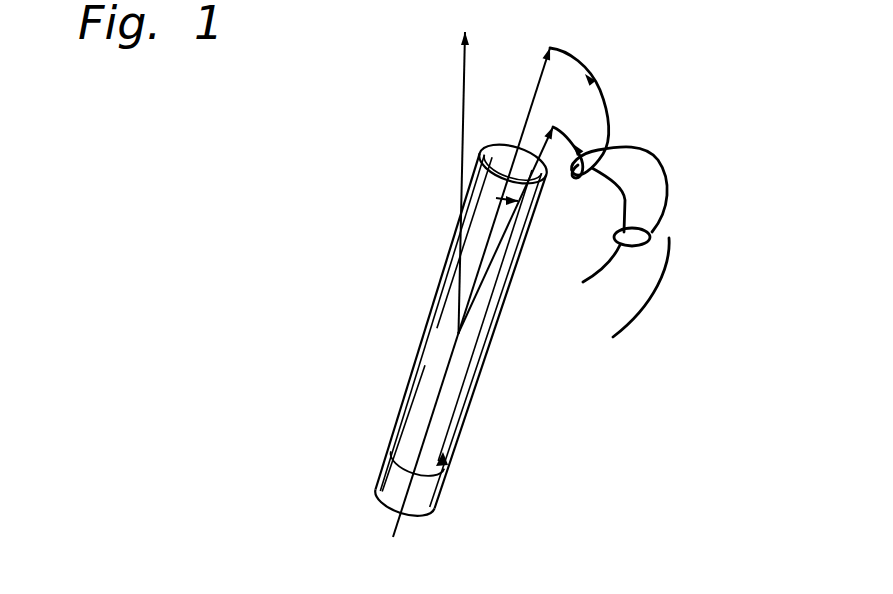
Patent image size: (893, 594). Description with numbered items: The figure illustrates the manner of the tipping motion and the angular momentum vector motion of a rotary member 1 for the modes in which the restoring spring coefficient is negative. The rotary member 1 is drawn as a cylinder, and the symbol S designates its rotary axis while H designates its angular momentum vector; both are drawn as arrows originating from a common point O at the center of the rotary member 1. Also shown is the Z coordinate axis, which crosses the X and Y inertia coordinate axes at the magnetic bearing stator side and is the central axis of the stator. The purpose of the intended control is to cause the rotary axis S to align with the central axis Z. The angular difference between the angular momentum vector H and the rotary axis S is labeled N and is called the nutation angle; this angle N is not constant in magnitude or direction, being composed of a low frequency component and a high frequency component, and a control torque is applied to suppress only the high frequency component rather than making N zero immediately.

The rotary member 1 is at (483, 350).
The central axis of the stator Z is at (464, 169).
The rotary axis S is at (474, 278).
The angular momentum vector H is at (512, 215).
The nutation angle N is at (498, 198).
The origin O is at (443, 346).